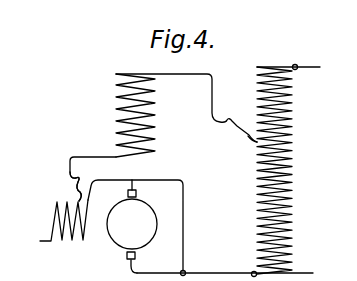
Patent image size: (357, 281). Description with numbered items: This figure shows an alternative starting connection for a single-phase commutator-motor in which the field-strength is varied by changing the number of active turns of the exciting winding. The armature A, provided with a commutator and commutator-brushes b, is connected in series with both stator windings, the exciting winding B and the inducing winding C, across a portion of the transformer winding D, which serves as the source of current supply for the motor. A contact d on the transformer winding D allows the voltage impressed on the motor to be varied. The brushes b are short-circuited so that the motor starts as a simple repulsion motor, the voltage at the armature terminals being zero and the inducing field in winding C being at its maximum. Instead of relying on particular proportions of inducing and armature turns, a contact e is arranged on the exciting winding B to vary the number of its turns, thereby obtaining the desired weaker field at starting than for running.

The armature A is at (118, 246).
The exciting winding B is at (83, 243).
The inducing winding C is at (155, 131).
The transformer winding D is at (292, 122).
The commutator-brushes b is at (138, 193).
The contact d is at (248, 139).
The contact e is at (70, 195).